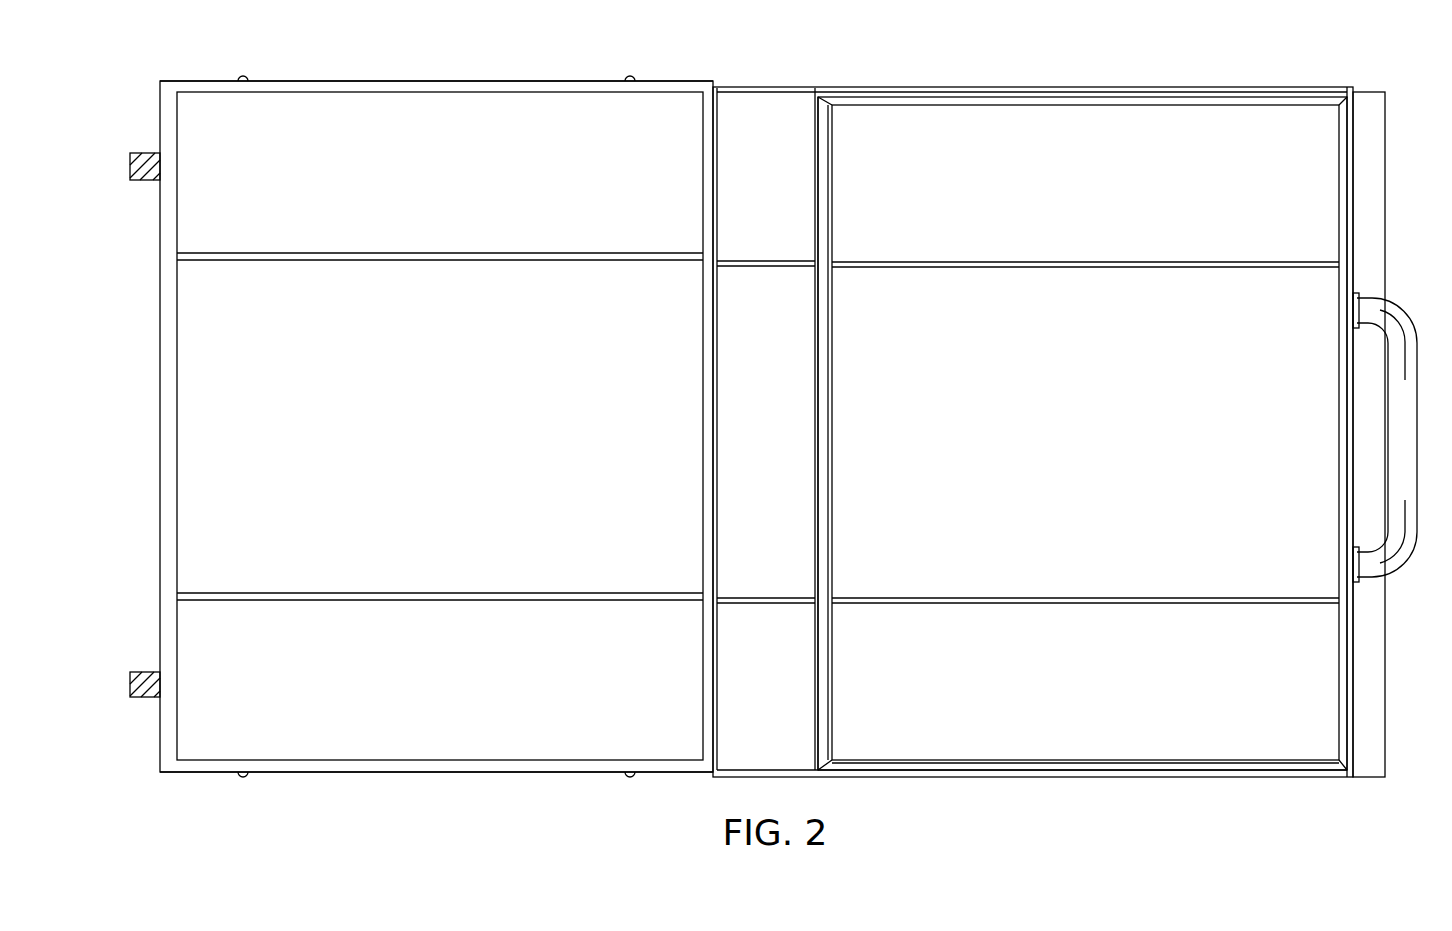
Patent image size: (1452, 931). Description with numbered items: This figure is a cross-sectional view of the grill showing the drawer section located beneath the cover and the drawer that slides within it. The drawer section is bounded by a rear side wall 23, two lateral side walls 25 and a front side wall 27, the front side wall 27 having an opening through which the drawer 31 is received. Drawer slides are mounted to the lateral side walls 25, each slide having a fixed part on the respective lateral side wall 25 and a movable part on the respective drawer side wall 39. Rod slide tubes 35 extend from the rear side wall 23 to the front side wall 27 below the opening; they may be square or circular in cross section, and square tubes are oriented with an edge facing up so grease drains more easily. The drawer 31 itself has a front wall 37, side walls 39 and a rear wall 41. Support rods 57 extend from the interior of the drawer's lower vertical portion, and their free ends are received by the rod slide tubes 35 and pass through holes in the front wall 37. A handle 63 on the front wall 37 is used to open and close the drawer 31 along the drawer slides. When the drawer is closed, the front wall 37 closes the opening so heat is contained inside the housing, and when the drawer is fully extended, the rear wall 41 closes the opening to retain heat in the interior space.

The rear side wall 23 is at (158, 403).
The lateral side walls 25 is at (372, 83).
The front side wall 27 is at (716, 472).
The drawer 31 is at (855, 108).
The rod slide tubes 35 is at (442, 253).
The front wall 37 is at (1370, 208).
The side walls 39 is at (1092, 88).
The rear wall 41 is at (814, 397).
The support rods 57 is at (1147, 262).
The handle 63 is at (1405, 310).